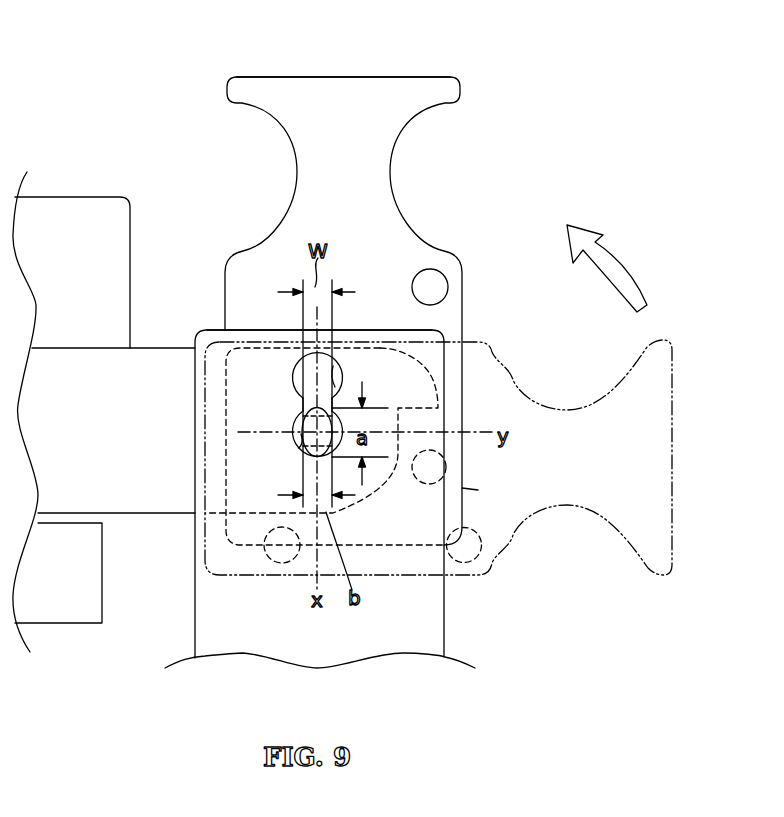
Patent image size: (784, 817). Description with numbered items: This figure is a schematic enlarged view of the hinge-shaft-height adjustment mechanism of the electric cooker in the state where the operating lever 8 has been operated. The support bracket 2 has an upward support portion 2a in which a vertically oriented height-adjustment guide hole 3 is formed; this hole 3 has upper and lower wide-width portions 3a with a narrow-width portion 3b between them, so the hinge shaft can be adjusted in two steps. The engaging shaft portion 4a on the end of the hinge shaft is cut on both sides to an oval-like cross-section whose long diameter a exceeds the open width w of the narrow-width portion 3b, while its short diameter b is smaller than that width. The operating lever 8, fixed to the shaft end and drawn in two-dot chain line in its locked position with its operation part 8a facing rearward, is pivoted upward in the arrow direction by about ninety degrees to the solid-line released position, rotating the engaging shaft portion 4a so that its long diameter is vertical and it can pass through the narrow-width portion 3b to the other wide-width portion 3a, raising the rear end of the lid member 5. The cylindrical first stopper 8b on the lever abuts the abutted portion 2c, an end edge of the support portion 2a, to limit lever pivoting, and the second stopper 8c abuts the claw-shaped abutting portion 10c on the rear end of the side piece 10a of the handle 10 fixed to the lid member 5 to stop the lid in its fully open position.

The support bracket 2 is at (450, 625).
The support portion 2a is at (378, 320).
The abutted portion 2c is at (478, 490).
The height-adjustment guide hole 3 is at (290, 360).
The wide-width portion 3a is at (336, 370).
The narrow-width portion 3b is at (310, 405).
The engaging shaft portion 4a is at (305, 413).
The lid member 5 is at (83, 188).
The operating lever 8 is at (465, 90).
The operation part 8a is at (345, 76).
The first stopper 8b is at (449, 286).
The second stopper 8c is at (425, 484).
The handle 10 is at (84, 345).
The side piece 10a is at (89, 485).
The abutting portion 10c is at (433, 380).